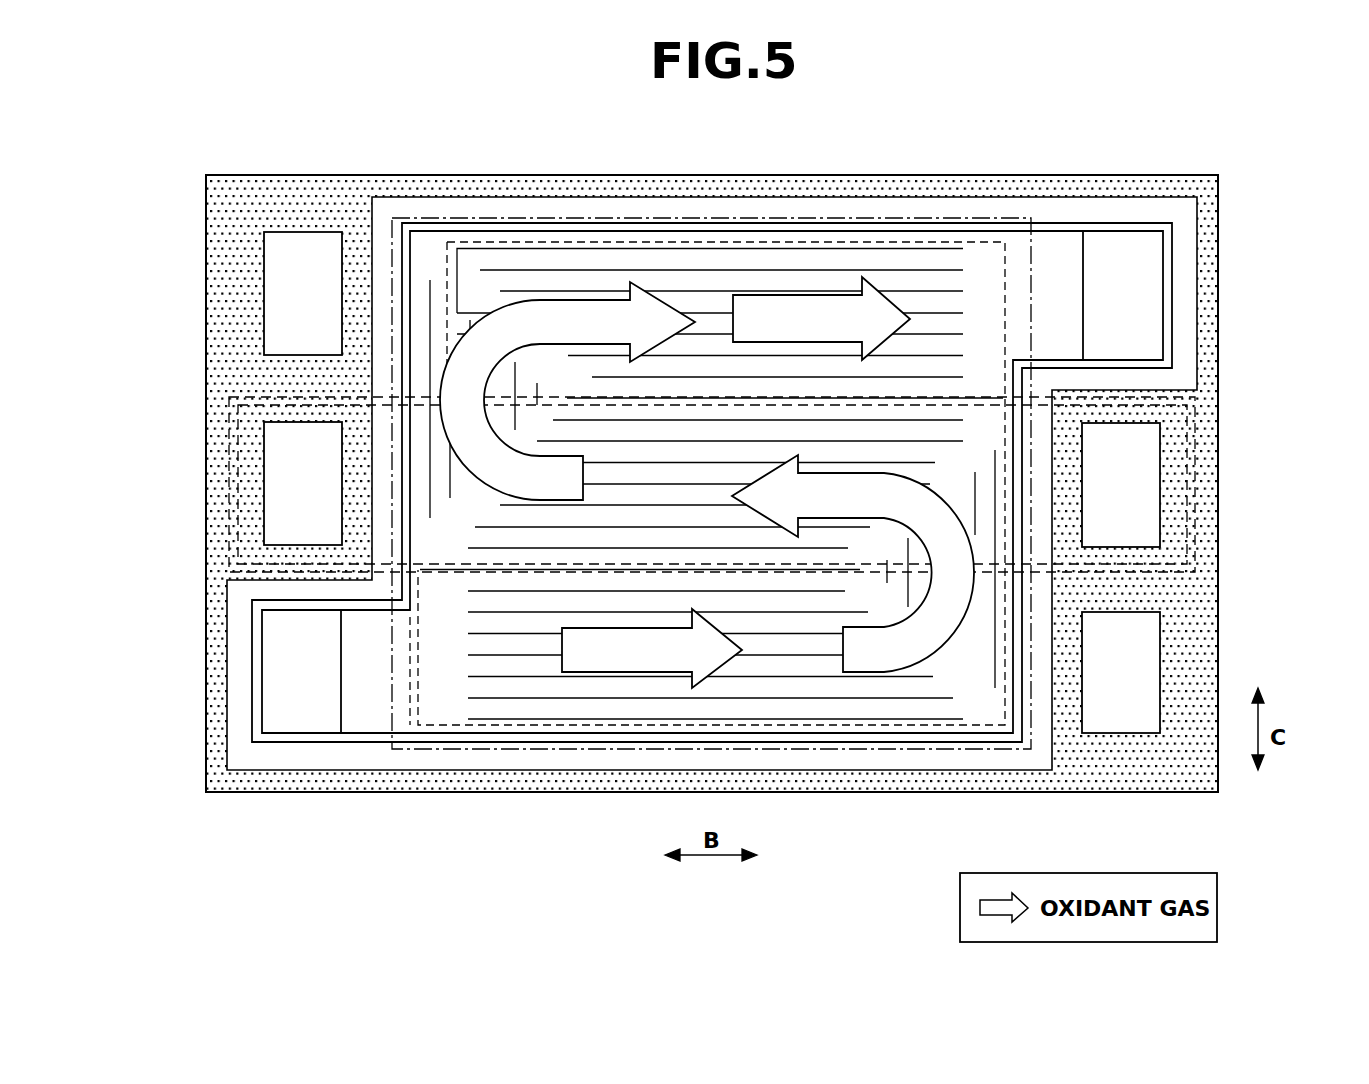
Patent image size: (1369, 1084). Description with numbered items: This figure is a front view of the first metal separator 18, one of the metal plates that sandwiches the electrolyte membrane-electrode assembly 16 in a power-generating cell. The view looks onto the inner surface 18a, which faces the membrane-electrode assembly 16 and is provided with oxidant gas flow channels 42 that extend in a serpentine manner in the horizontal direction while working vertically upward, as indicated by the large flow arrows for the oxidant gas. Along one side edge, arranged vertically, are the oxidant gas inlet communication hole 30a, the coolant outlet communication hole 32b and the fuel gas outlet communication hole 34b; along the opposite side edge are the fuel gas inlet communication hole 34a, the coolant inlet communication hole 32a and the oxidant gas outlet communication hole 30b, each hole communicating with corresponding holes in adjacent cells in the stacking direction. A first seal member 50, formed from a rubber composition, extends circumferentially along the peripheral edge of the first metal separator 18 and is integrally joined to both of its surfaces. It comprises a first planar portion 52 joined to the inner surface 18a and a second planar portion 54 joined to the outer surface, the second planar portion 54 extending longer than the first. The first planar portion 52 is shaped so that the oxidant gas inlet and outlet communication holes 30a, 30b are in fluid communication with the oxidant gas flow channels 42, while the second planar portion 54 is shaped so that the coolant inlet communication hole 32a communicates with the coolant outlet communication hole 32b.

The electrolyte membrane-electrode assembly 16 is at (657, 218).
The first metal separator 18 is at (1102, 125).
The inner surface 18a is at (928, 770).
The oxidant gas inlet communication hole 30a is at (298, 668).
The oxidant gas outlet communication hole 30b is at (1130, 297).
The coolant inlet communication hole 32a is at (1128, 487).
The coolant outlet communication hole 32b is at (297, 484).
The fuel gas inlet communication hole 34a is at (1130, 671).
The fuel gas outlet communication hole 34b is at (300, 294).
The oxidant gas flow channels 42 is at (640, 688).
The first seal member 50 is at (1121, 180).
The first planar portion 52 is at (1197, 607).
The second planar portion 54 is at (488, 738).